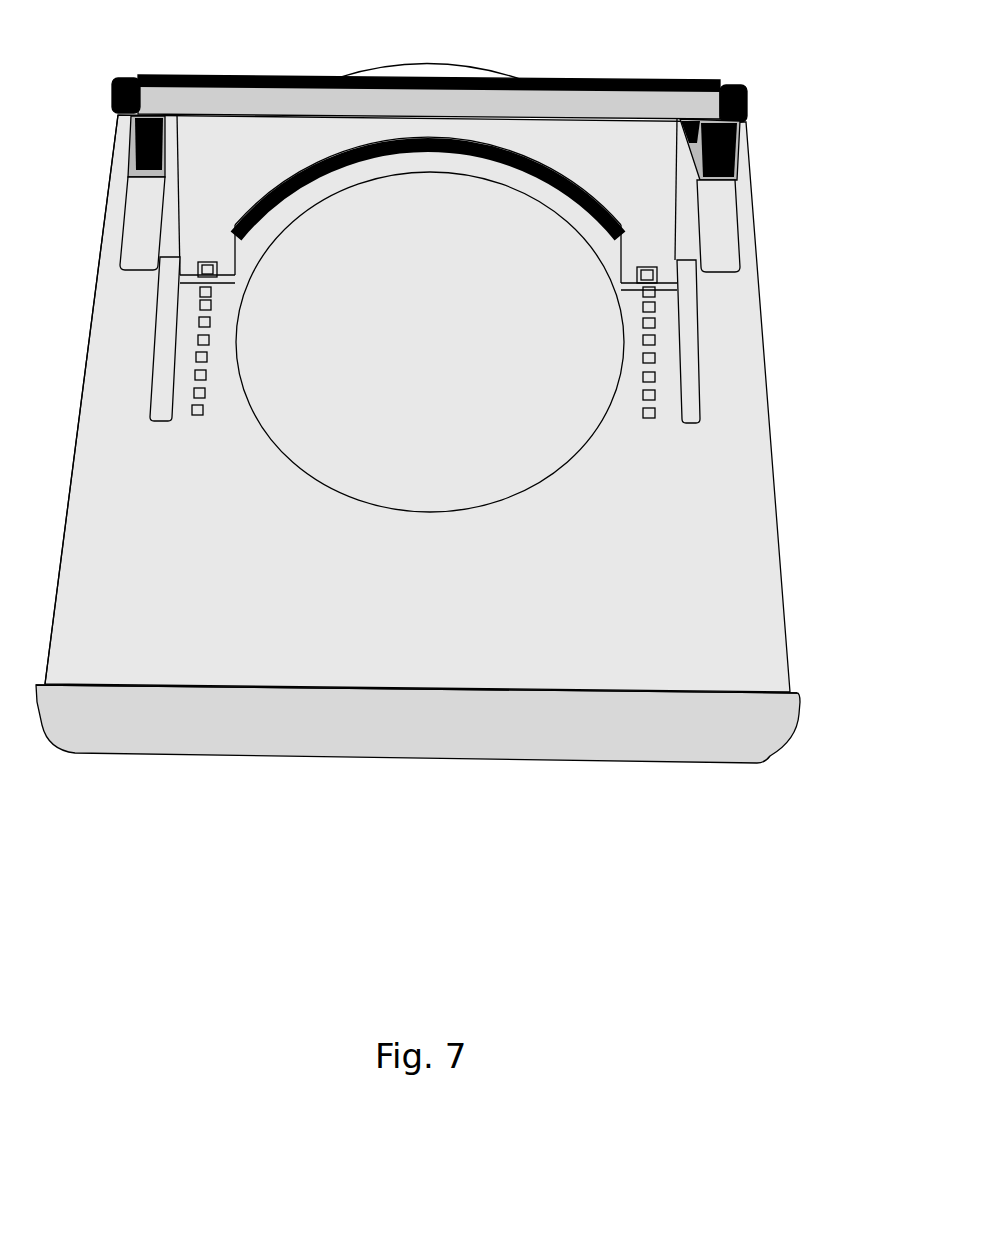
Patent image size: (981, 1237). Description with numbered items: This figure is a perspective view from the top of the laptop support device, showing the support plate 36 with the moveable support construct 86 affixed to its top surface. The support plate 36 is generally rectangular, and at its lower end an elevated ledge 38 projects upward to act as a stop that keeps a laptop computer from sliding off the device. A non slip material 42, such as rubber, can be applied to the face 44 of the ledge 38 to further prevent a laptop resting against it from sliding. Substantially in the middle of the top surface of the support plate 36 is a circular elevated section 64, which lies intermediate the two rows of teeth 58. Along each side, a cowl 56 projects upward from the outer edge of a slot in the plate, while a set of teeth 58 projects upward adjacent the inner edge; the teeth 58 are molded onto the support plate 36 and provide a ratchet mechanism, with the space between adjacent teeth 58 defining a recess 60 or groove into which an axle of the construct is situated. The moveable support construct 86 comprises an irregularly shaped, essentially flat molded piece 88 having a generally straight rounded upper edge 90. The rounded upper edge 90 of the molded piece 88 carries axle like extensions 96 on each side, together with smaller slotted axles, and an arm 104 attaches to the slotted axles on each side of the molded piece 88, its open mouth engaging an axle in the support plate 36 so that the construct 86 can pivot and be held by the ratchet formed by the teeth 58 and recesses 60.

The support plate 36 is at (82, 368).
The ledge 38 is at (697, 724).
The non slip material 42 is at (737, 693).
The face 44 is at (417, 403).
The cowl 56 is at (160, 270).
The teeth 58 is at (205, 298).
The recess 60 is at (195, 397).
The circular elevated section 64 is at (430, 342).
The moveable support construct 86 is at (603, 62).
The molded piece 88 is at (288, 153).
The rounded upper edge 90 is at (545, 80).
The axle like extensions 96 is at (698, 108).
The arm 104 is at (733, 150).